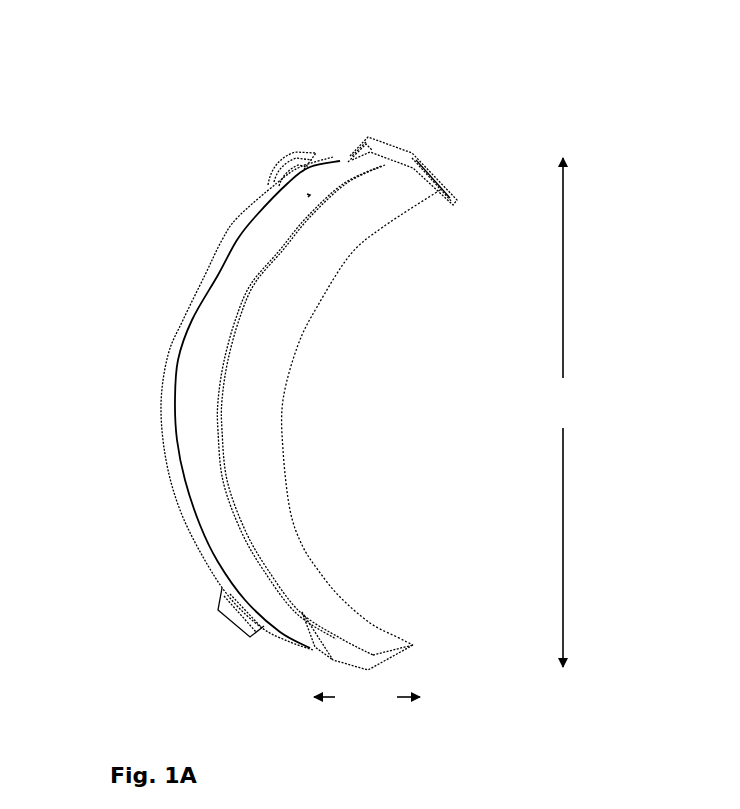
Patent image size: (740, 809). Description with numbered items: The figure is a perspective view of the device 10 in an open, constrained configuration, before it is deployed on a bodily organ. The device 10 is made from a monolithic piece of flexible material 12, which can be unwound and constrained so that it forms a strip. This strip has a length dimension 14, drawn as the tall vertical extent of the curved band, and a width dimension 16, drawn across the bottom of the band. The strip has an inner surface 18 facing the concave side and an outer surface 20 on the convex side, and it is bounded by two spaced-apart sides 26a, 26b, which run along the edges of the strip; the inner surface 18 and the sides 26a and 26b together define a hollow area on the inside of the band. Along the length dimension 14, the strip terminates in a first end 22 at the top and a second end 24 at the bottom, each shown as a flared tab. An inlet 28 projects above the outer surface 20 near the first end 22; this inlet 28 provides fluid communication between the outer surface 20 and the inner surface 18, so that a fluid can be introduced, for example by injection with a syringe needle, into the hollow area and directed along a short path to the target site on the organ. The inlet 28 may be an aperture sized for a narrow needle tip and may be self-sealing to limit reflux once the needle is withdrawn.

The device 10 is at (535, 71).
The flexible material 12 is at (135, 380).
The length dimension 14 is at (562, 412).
The width dimension 16 is at (367, 700).
The inner surface 18 is at (215, 358).
The outer surface 20 is at (217, 560).
The first end 22 is at (387, 145).
The second end 24 is at (337, 662).
The first side 26a is at (350, 150).
The second side 26b is at (445, 177).
The inlet 28 is at (285, 152).